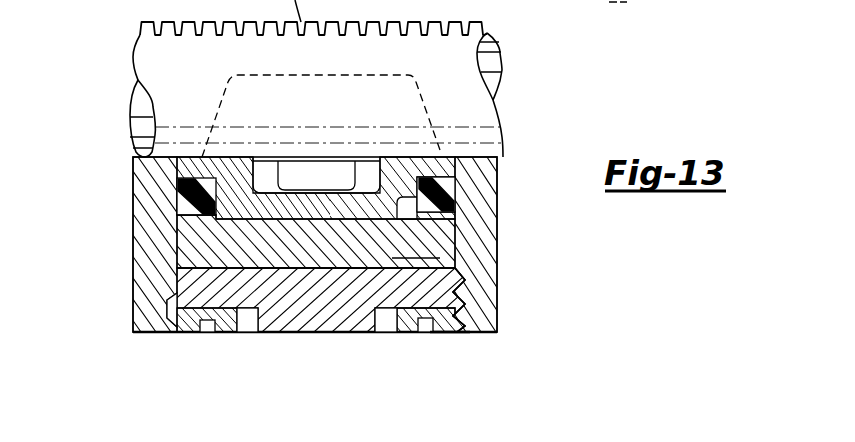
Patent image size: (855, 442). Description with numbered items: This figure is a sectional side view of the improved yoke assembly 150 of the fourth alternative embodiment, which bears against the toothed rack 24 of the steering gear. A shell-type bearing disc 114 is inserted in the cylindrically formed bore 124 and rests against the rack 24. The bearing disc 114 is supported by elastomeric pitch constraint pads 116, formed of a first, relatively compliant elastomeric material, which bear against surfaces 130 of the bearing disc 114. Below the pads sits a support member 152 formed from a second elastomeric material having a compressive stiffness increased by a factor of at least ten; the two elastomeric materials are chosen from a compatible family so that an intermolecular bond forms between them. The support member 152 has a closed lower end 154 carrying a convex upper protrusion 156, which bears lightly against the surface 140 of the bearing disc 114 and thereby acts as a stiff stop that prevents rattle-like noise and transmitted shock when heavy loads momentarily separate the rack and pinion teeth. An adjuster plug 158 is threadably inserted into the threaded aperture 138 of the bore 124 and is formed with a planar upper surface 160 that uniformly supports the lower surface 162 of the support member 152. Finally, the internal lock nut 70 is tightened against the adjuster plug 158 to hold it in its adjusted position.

The rack 24 is at (137, 72).
The improved yoke assembly 150 is at (513, 83).
The surfaces 130 is at (212, 182).
The shell-type bearing disc 114 is at (476, 180).
The elastomeric pitch constraint pads 116 is at (180, 204).
The surface 140 is at (216, 216).
The bore 124 is at (190, 272).
The planar upper surface 160 is at (200, 284).
The threaded aperture 138 is at (170, 312).
The support member 152 is at (392, 212).
The convex upper protrusion 156 is at (392, 258).
The closed lower end 154 is at (437, 300).
The adjuster plug 158 is at (458, 300).
The lower surface 162 is at (348, 270).
The internal lock nut 70 is at (448, 332).